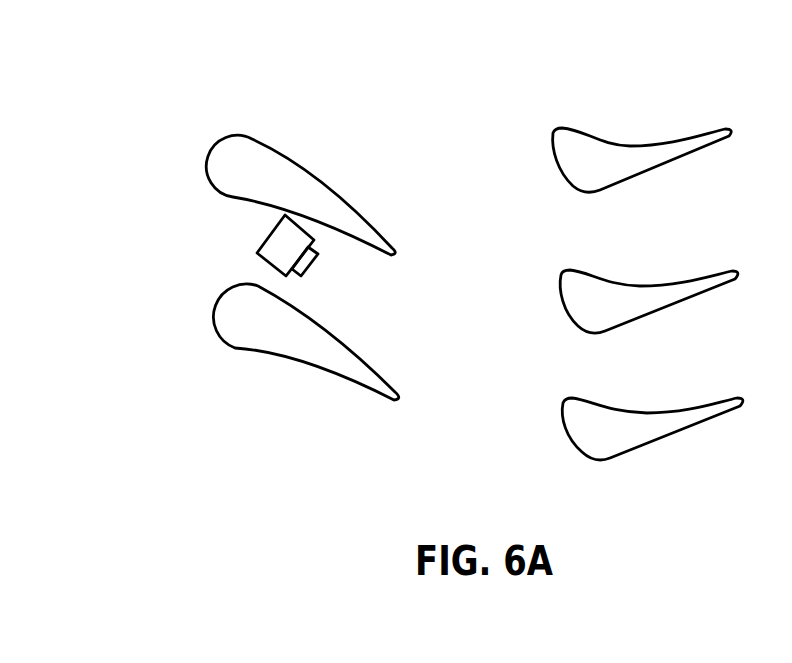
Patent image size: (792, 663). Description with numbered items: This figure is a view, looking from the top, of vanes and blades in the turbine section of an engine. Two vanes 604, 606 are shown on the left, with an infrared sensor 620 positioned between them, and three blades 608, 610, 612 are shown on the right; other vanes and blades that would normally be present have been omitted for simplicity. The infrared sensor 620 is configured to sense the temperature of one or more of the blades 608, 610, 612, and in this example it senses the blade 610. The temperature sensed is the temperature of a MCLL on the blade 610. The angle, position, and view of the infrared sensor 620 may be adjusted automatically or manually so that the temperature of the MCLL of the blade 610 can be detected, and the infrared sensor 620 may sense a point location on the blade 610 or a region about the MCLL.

The vane 604 is at (303, 188).
The vane 606 is at (295, 330).
The infrared sensor 620 is at (273, 235).
The blade 608 is at (612, 160).
The blade 610 is at (630, 300).
The blade 612 is at (645, 422).